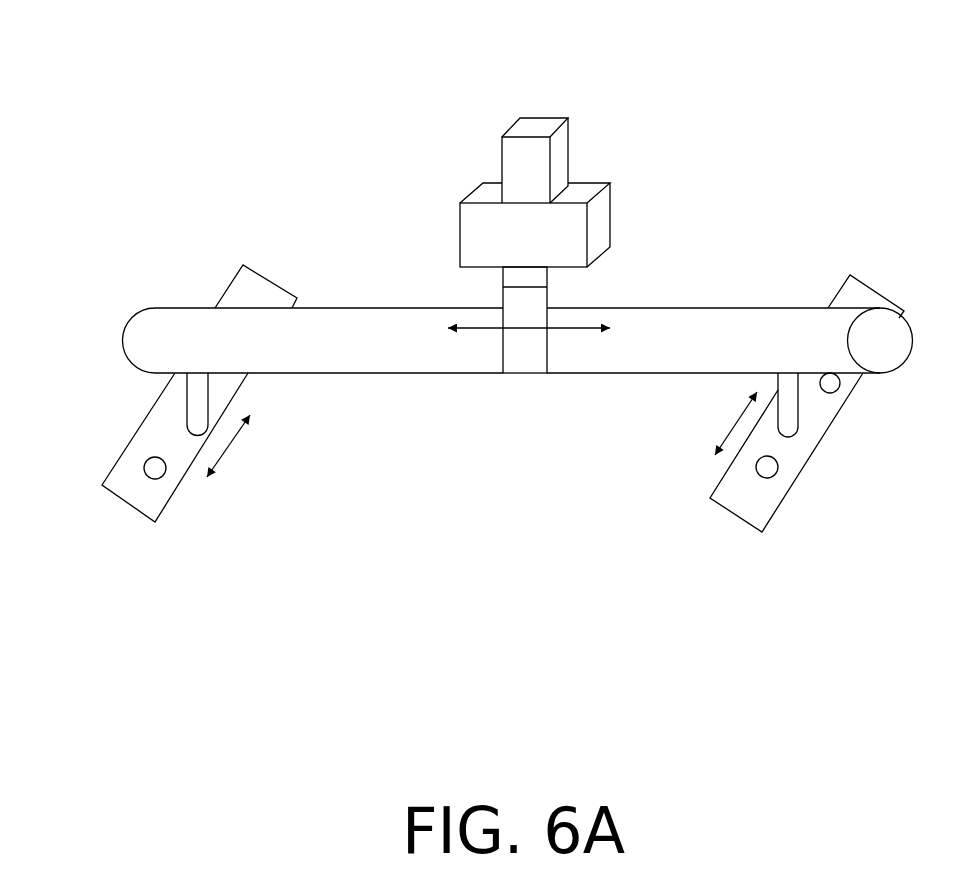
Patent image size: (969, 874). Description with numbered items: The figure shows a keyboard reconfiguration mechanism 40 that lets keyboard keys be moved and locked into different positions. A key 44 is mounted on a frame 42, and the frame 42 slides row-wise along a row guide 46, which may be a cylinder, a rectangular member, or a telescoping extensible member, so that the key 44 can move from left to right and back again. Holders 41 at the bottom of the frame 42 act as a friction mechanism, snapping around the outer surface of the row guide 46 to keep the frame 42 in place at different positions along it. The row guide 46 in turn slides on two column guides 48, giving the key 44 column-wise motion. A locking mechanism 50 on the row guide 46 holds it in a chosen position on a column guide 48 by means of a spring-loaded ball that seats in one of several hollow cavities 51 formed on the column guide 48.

The keyboard reconfiguration mechanism 40 is at (782, 77).
The holders 41 is at (527, 347).
The frame 42 is at (600, 232).
The key 44 is at (552, 148).
The row guide 46 is at (588, 345).
The column guide 48 is at (120, 482).
The locking mechanism 50 is at (186, 397).
The hollow cavities 51 is at (167, 470).